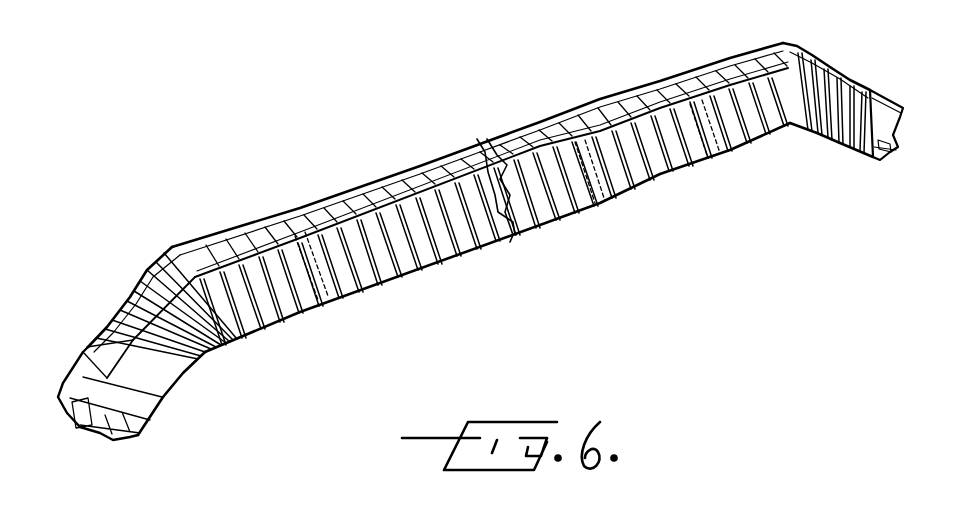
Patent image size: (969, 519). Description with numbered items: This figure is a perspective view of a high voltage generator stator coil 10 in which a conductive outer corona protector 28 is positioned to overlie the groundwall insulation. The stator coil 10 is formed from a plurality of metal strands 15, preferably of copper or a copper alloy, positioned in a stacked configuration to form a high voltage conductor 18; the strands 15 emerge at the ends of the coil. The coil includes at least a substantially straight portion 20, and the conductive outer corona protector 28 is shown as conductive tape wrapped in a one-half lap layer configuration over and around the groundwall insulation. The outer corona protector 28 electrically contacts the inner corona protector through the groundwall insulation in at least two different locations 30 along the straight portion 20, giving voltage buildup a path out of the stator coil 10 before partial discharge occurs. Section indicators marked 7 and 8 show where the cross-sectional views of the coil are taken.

The high voltage generator stator coil 10 is at (480, 260).
The metal strands 15 is at (867, 158).
The high voltage conductor 18 is at (153, 442).
The straight portion 20 is at (504, 131).
The conductive outer corona protector 28 is at (172, 247).
The electrical contact locations 30 is at (311, 314).
The section line 7- 7 is at (80, 318).
The section line 8- 8 is at (404, 320).